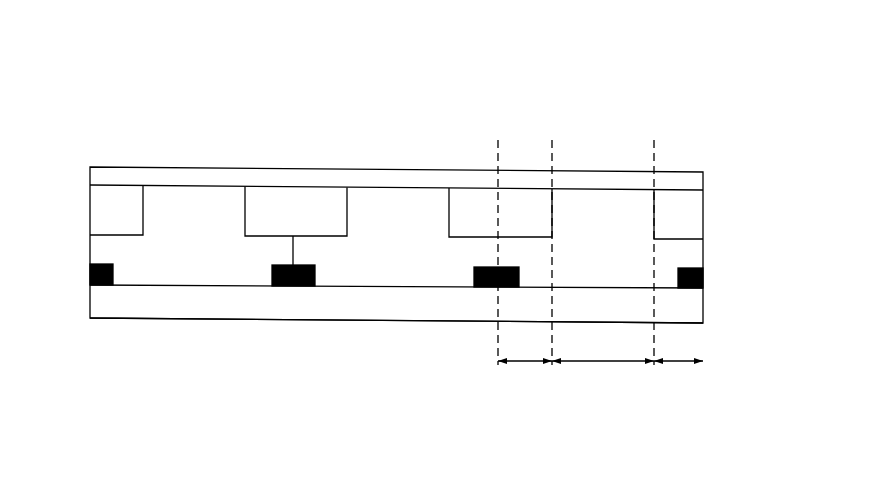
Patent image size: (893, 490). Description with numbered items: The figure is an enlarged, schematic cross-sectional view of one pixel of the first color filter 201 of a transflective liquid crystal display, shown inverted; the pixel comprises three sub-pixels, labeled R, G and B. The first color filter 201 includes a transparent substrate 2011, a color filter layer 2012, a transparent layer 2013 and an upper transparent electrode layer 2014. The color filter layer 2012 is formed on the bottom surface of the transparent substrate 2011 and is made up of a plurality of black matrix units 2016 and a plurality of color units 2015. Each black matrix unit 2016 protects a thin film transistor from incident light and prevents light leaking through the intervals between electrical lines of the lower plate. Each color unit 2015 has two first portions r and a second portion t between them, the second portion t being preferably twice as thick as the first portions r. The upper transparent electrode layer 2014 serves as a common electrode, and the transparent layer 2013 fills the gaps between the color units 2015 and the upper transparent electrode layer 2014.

The first color filter 201 is at (444, 62).
The transparent substrate 2011 is at (692, 312).
The color filter layer 2012 is at (797, 235).
The transparent layer 2013 is at (297, 207).
The upper transparent electrode layer 2014 is at (692, 181).
The color unit 2015 is at (692, 257).
The black matrix unit 2016 is at (703, 279).